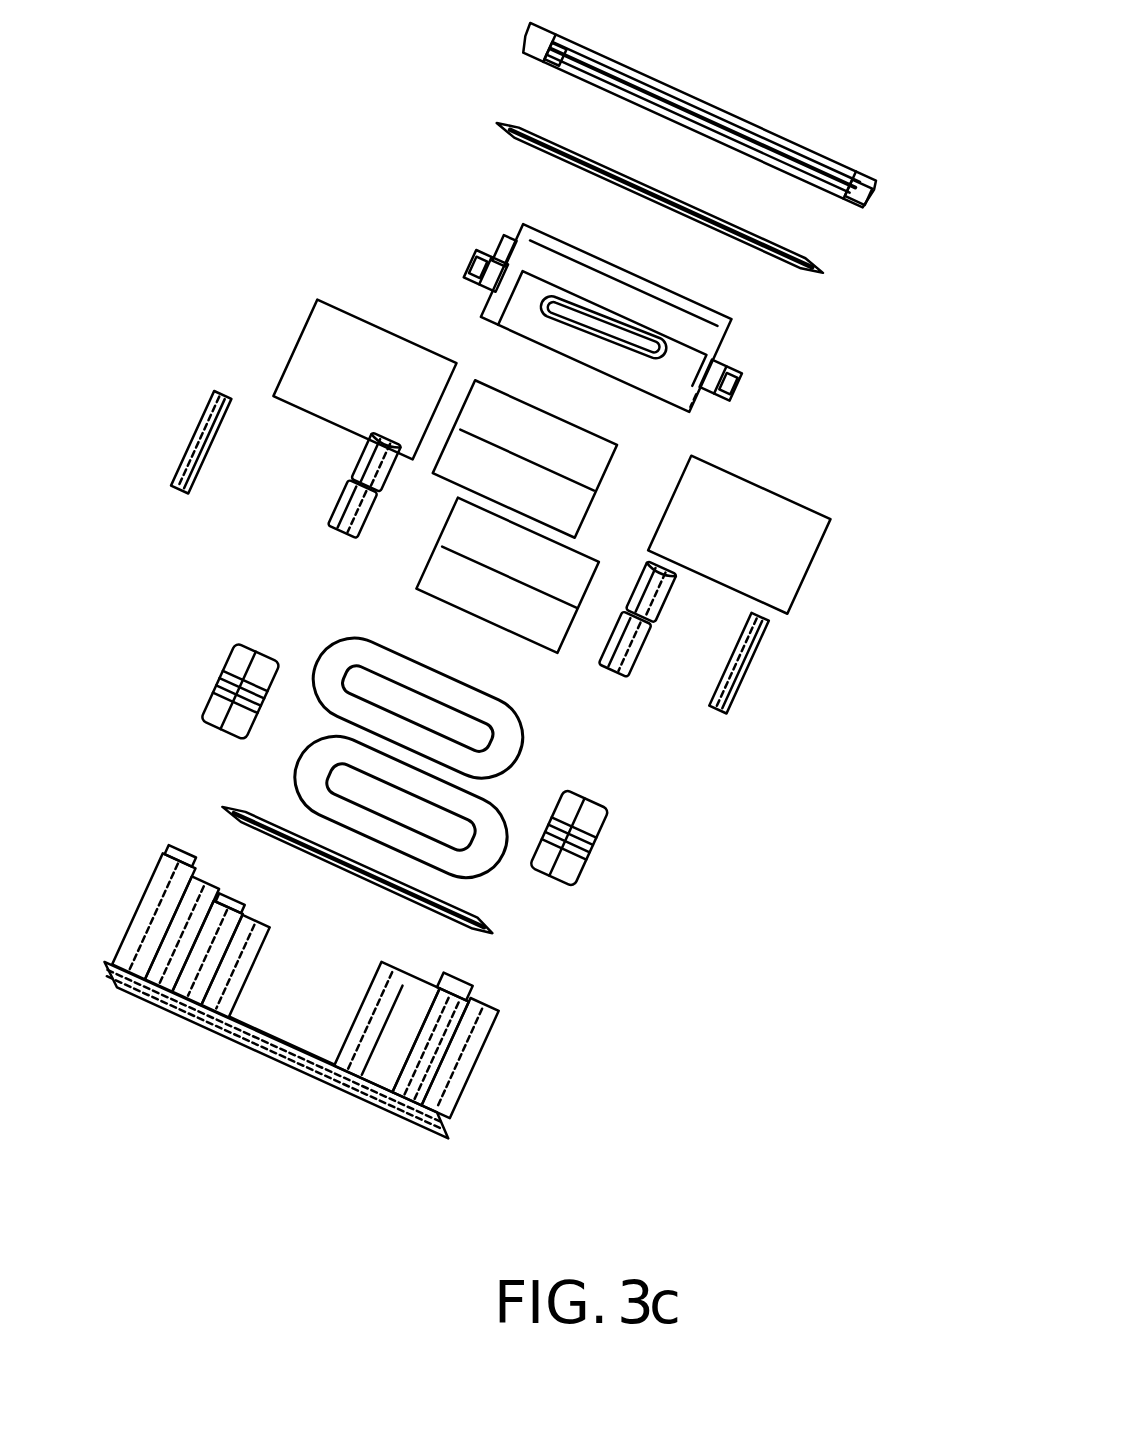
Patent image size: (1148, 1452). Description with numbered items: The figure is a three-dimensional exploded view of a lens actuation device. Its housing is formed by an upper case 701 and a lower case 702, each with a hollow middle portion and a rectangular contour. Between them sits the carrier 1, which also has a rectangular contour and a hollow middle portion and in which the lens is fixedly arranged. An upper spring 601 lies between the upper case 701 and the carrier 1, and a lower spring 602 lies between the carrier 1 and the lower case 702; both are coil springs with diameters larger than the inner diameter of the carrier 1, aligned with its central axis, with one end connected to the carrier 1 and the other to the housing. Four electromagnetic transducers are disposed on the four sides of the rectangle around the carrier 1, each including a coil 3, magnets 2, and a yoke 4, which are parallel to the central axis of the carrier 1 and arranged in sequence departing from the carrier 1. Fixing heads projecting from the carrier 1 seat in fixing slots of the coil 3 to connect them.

The upper case 701 is at (559, 114).
The upper spring 601 is at (536, 198).
The carrier 1 is at (514, 318).
The yoke 4 is at (769, 588).
The magnets 2 is at (622, 666).
The coil 3 is at (490, 799).
The lower spring 602 is at (479, 931).
The lower case 702 is at (375, 1006).